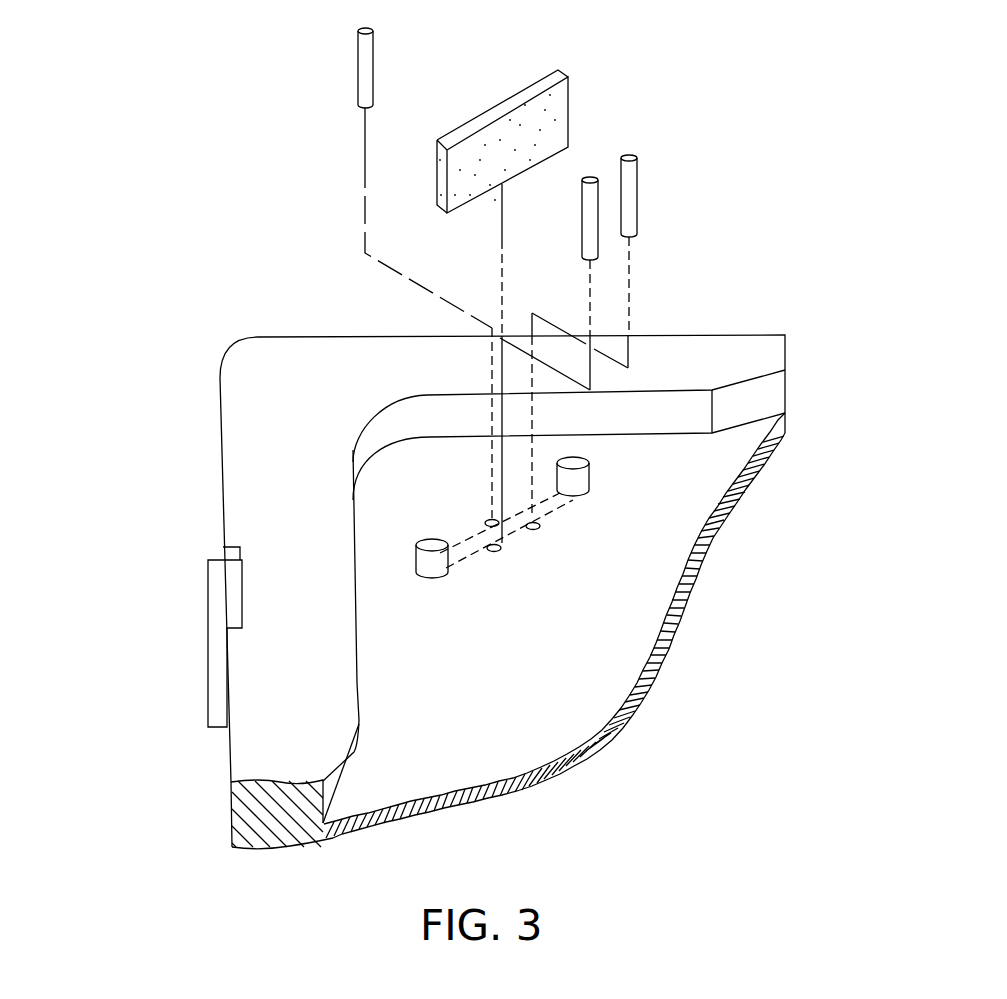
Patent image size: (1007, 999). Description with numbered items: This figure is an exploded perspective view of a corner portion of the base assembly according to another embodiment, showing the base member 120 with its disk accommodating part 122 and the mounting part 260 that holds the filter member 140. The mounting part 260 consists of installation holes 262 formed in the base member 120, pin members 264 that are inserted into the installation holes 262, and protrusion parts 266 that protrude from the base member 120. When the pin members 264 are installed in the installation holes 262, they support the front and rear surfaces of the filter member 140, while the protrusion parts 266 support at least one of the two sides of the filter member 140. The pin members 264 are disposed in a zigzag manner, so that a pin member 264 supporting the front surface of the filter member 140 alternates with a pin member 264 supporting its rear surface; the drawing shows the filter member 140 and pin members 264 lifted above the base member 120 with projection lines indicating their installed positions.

The base member 120 is at (240, 505).
The disk accommodating part 122 is at (636, 484).
The filter member 140 is at (563, 107).
The mounting part 260 is at (225, 88).
The installation holes 262 is at (490, 518).
The pin members 264 is at (365, 80).
The protrusion parts 266 is at (428, 545).